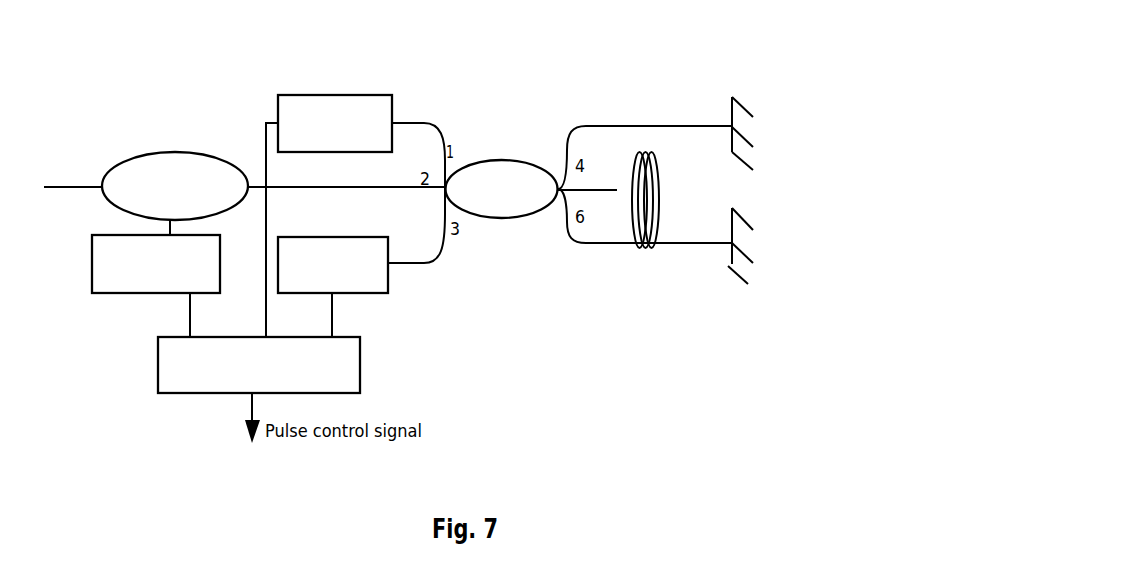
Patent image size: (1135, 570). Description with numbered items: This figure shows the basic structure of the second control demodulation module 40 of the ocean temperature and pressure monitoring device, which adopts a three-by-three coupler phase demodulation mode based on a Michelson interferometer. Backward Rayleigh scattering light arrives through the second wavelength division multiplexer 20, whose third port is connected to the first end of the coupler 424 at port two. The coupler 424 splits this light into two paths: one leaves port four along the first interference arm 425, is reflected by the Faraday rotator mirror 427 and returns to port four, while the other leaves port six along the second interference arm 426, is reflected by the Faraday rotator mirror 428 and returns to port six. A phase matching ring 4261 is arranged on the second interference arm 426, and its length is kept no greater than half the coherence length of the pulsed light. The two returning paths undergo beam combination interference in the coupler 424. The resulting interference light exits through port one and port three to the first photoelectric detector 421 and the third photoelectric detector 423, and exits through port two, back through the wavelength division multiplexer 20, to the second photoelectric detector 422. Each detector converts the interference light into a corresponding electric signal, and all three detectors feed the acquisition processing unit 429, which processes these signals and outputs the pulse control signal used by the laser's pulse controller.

The second wavelength division multiplexer 20 is at (190, 152).
The control demodulation module 40 is at (655, 66).
The first photoelectric detector 421 is at (337, 95).
The second photoelectric detector 422 is at (219, 282).
The third photoelectric detector 423 is at (390, 240).
The coupler 424 is at (503, 172).
The first interference arm 425 is at (668, 126).
The second interference arm 426 is at (678, 242).
The phase matching ring 4261 is at (660, 206).
The Faraday rotator mirror 427 is at (745, 100).
The Faraday rotator mirror 428 is at (745, 225).
The acquisition processing unit 429 is at (354, 375).